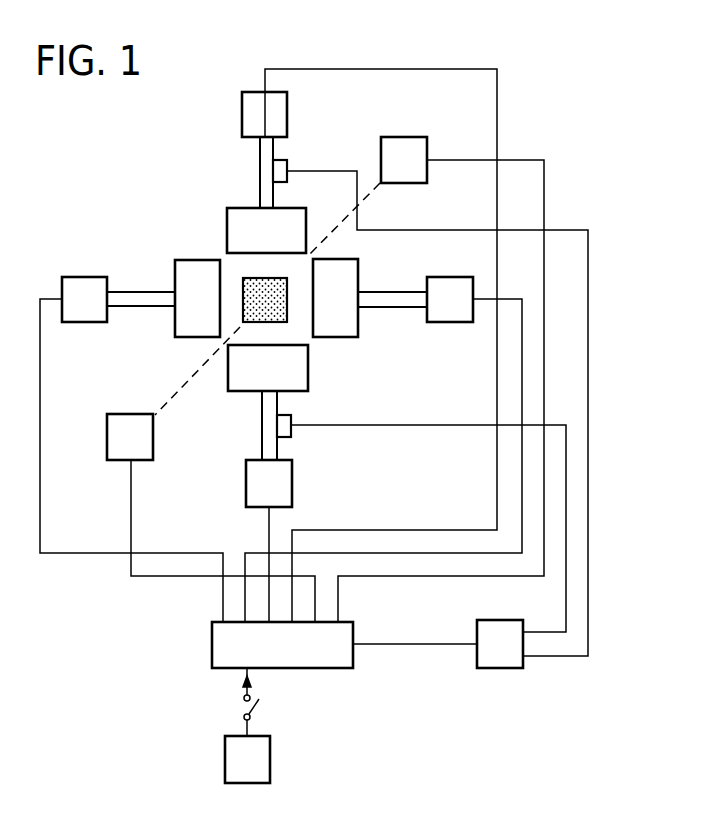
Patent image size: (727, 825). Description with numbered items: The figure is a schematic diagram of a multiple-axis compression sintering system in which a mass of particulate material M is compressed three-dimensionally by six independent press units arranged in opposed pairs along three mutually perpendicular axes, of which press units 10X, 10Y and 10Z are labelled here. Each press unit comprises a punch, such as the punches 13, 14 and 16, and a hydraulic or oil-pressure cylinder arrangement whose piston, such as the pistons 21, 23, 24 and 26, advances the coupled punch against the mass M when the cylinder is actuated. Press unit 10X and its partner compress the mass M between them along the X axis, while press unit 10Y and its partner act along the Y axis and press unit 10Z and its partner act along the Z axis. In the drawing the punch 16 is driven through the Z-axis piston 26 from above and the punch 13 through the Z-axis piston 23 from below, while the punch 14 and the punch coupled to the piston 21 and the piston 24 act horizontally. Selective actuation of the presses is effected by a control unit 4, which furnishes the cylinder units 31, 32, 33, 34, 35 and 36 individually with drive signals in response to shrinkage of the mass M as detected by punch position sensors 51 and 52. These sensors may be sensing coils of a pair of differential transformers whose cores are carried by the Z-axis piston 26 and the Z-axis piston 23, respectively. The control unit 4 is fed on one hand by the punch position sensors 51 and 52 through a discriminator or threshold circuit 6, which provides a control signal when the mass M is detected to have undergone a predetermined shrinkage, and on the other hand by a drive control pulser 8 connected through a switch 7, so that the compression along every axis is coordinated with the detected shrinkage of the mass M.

The control unit 4 is at (211, 637).
The discriminator or threshold circuit 6 is at (477, 630).
The switch 7 is at (240, 708).
The drive control pulser 8 is at (222, 758).
The press unit 10X is at (473, 261).
The press unit 10Y is at (416, 224).
The press unit 10Z is at (240, 201).
The punch 13 is at (303, 367).
The punch 14 is at (358, 322).
The punch 16 is at (298, 217).
The hydraulic cylinder arrangement and piston 21 is at (176, 274).
The Z-axis piston 23 is at (263, 430).
The hydraulic cylinder arrangement and piston 24 is at (398, 298).
The Z-axis piston 26 is at (261, 157).
The cylinder unit 31 is at (86, 283).
The cylinder unit 32 is at (143, 455).
The cylinder unit 33 is at (288, 492).
The cylinder unit 34 is at (457, 324).
The cylinder unit 35 is at (398, 138).
The cylinder unit 36 is at (285, 118).
The punch position sensor 51 is at (288, 167).
The punch position sensor 52 is at (292, 437).
The mass of particulate material M is at (243, 283).